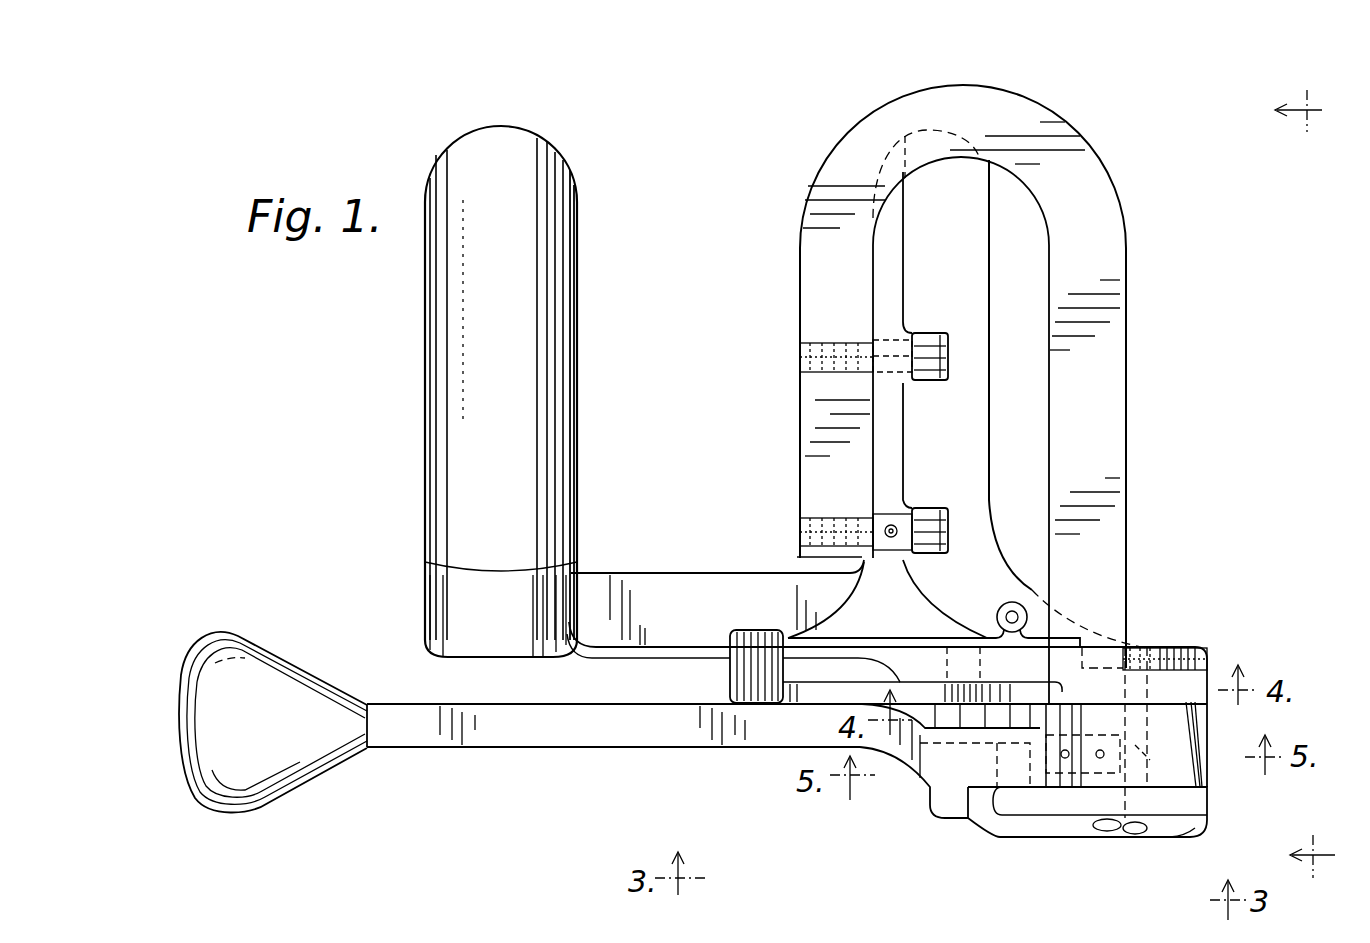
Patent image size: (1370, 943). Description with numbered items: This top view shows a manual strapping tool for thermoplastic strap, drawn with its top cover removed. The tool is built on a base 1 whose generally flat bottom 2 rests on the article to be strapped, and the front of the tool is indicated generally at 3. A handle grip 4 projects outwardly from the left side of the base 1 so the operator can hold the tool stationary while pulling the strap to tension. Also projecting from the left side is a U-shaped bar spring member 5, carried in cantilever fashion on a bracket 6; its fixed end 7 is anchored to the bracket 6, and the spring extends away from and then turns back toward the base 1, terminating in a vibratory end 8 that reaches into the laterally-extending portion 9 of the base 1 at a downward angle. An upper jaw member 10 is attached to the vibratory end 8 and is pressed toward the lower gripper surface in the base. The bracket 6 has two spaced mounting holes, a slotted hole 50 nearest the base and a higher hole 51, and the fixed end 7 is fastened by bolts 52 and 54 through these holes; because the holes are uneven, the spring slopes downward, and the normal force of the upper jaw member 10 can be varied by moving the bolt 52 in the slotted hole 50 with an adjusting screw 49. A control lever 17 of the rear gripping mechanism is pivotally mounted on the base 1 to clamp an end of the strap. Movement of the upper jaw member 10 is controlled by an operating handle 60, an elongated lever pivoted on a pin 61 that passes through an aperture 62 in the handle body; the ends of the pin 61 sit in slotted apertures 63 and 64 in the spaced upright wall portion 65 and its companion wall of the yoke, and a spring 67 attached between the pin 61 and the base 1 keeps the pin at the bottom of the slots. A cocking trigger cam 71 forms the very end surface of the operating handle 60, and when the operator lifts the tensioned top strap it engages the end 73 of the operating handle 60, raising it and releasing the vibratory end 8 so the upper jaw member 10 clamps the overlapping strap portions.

The base 1 is at (680, 682).
The flat bottom 2 is at (1320, 484).
The front of the tool 3 is at (1210, 777).
The handle grip 4 is at (445, 348).
The U-shaped bar spring member 5 is at (974, 92).
The bracket 6 is at (902, 240).
The fixed end 7 is at (806, 416).
The vibratory end 8 is at (1108, 483).
The laterally-extending portion 9 is at (1056, 832).
The upper jaw member 10 is at (1112, 712).
The control lever 17 is at (757, 640).
The adjusting screw 49 is at (900, 562).
The slotted mounting hole 50 is at (904, 512).
The mounting hole 51 is at (917, 336).
The bolt 52 is at (800, 529).
The bolt 54 is at (800, 353).
The operating handle 60 is at (410, 740).
The pin 61 is at (1136, 740).
The aperture 62 is at (1140, 746).
The slotted aperture 63 is at (1100, 833).
The slotted aperture 64 is at (1143, 658).
The upright wall portion 65 is at (1190, 838).
The spring 67 is at (1180, 655).
The cocking trigger cam 71 is at (1196, 738).
The end of the operating handle 73 is at (285, 690).